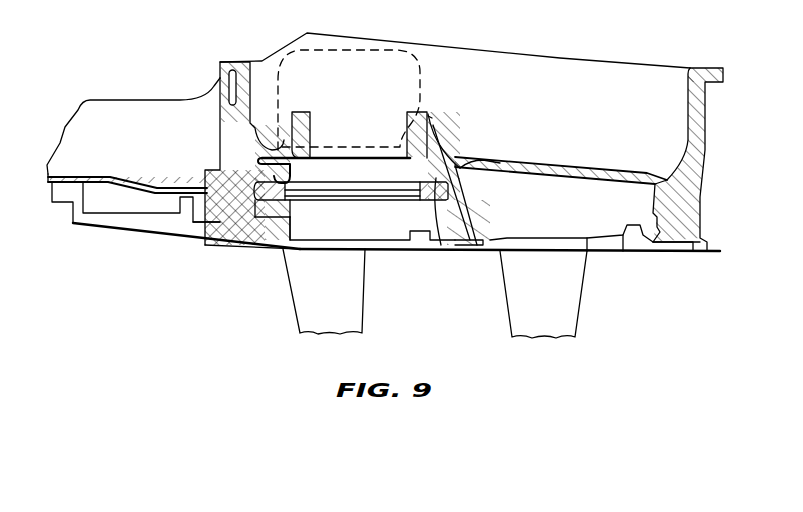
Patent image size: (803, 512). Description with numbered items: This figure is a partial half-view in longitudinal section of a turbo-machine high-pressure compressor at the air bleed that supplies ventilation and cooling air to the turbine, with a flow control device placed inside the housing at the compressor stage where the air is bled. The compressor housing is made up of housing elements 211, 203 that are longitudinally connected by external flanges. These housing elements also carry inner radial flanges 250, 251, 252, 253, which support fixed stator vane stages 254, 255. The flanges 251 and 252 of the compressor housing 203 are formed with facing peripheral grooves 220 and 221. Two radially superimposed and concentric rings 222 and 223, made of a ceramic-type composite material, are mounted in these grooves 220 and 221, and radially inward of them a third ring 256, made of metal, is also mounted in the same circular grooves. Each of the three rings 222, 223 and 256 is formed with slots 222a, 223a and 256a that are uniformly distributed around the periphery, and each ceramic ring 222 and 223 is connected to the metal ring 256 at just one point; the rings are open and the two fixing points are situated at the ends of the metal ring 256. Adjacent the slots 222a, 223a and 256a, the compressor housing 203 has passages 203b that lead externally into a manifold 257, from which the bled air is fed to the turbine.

The compressor housing element 203 is at (590, 171).
The passages 203b is at (371, 120).
The compressor housing element 211 is at (127, 186).
The peripheral groove 220 is at (248, 186).
The peripheral groove 221 is at (484, 183).
The ceramic ring 222 is at (277, 206).
The slots 222a is at (386, 183).
The ceramic ring 223 is at (441, 197).
The slots 223a is at (422, 148).
The inner radial flange 250 is at (216, 234).
The inner radial flange 251 is at (243, 216).
The inner radial flange 252 is at (467, 232).
The inner radial flange 253 is at (673, 234).
The fixed stator vane stage 254 is at (346, 303).
The fixed stator vane stage 255 is at (567, 303).
The metal ring 256 is at (281, 201).
The slots 256a is at (405, 197).
The manifold 257 is at (297, 50).